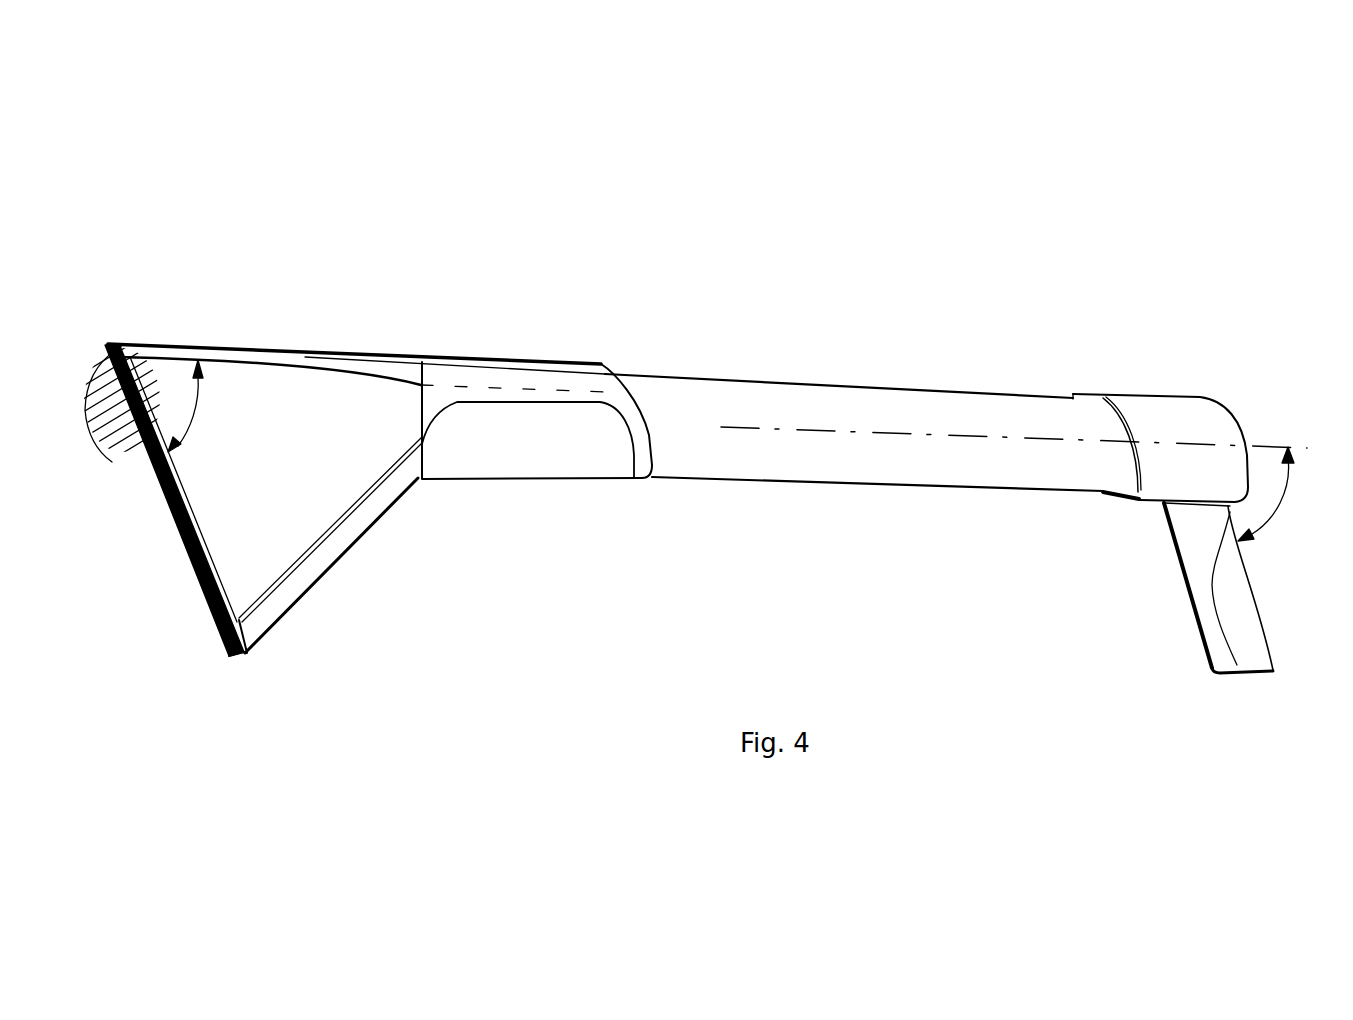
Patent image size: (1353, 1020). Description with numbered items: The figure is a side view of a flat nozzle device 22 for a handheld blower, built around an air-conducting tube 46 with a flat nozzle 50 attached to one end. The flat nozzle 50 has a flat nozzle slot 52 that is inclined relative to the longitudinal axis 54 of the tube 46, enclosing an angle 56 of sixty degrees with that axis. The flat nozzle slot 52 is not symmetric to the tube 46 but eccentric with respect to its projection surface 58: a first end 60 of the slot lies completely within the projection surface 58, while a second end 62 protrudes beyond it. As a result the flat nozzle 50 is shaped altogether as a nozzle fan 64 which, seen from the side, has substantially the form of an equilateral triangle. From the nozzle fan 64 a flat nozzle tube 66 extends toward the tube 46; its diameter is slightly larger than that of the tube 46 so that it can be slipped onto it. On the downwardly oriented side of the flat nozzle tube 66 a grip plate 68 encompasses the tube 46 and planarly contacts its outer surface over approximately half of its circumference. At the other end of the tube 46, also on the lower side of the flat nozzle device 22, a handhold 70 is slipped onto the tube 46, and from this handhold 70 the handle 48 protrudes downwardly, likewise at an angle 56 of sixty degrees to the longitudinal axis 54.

The flat nozzle device 22 is at (194, 161).
The tube 46 is at (830, 405).
The handle 48 is at (1211, 634).
The flat nozzle 50 is at (284, 322).
The flat nozzle slot 52 is at (185, 552).
The longitudinal axis 54 is at (915, 420).
The angle 56 is at (169, 380).
The projection surface 58 is at (110, 458).
The first end 60 is at (107, 342).
The second end 62 is at (238, 663).
The nozzle fan 64 is at (308, 512).
The flat nozzle tube 66 is at (520, 380).
The grip plate 68 is at (543, 453).
The handhold 70 is at (1172, 415).